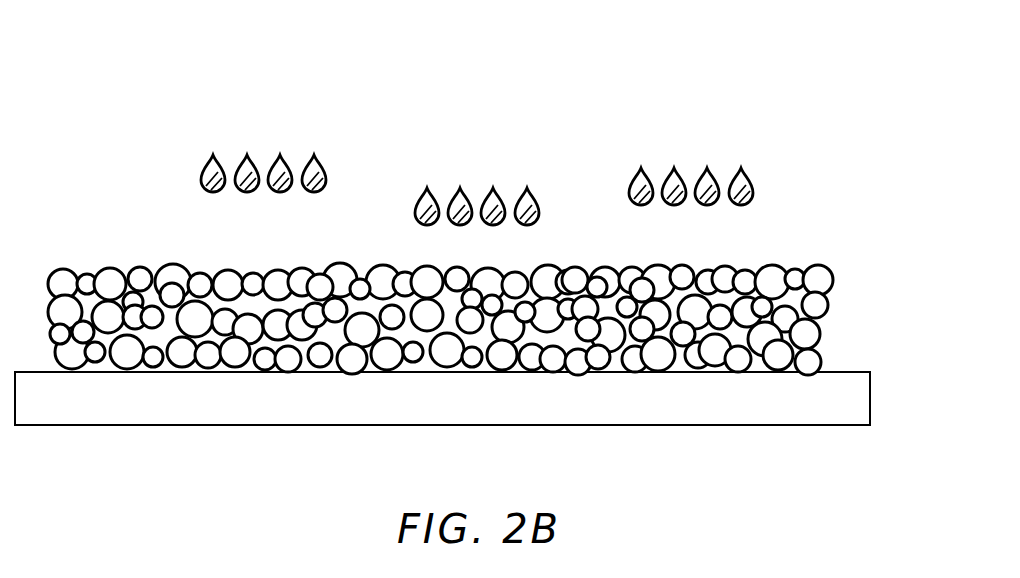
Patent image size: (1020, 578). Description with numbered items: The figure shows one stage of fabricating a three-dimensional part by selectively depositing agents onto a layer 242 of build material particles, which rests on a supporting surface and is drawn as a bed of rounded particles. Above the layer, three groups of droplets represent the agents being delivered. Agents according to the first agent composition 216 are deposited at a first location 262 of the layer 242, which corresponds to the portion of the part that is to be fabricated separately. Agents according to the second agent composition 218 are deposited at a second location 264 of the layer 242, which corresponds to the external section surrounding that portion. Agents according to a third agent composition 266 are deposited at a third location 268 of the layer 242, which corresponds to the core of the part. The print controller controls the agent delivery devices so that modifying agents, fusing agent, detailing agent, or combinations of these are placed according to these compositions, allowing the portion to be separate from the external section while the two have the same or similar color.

The third agent composition 266 is at (271, 121).
The first agent composition 216 is at (485, 158).
The second agent composition 218 is at (699, 135).
The layer 242 is at (832, 296).
The third location 268 is at (251, 355).
The first location 262 is at (480, 368).
The second location 264 is at (660, 368).